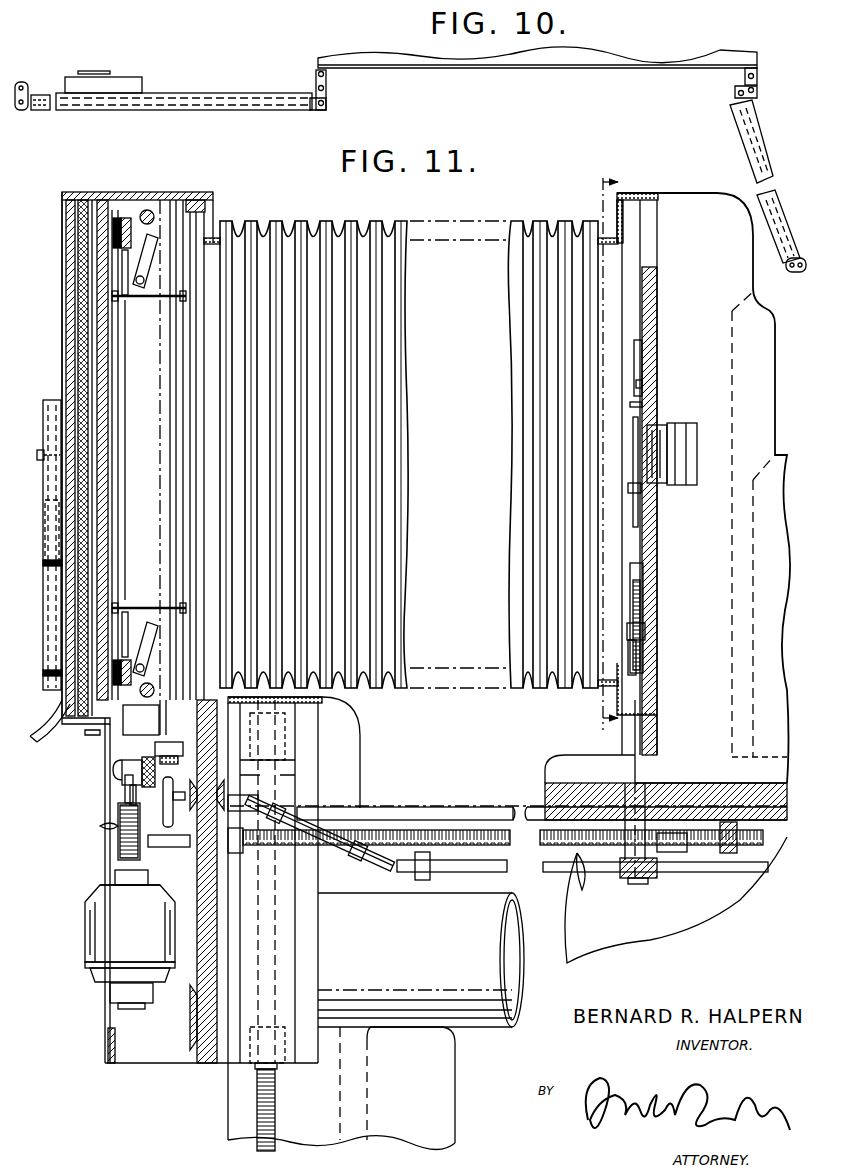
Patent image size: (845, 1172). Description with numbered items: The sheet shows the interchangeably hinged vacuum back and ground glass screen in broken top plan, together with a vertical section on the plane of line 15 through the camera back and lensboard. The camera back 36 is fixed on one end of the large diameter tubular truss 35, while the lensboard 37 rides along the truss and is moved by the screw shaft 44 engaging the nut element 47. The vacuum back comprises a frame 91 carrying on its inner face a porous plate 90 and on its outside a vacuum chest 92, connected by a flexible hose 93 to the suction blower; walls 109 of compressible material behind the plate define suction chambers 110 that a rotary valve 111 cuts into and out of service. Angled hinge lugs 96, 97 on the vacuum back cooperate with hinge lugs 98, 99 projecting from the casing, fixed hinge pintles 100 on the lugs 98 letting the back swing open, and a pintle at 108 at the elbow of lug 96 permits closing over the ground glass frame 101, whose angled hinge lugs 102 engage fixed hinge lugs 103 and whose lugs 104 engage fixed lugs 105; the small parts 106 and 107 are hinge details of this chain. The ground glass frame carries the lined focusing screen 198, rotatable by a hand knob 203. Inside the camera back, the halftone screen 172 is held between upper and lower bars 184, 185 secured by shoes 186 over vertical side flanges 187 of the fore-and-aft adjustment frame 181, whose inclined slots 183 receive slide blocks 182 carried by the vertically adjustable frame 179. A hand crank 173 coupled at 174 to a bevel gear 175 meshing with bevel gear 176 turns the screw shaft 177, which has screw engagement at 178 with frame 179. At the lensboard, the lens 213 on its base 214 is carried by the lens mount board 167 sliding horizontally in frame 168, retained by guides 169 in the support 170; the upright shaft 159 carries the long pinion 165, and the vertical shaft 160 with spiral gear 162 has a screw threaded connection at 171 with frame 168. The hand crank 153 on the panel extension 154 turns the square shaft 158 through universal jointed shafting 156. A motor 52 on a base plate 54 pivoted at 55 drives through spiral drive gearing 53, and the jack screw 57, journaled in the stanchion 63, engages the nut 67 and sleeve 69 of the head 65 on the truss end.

In FIG. 10, the camera back 36 is at (598, 68).
In FIG. 11, the camera back 36 is at (180, 192).
In FIG. 10, the frame 91 is at (180, 110).
In FIG. 11, the frame 91 is at (66, 205).
In FIG. 10, the vacuum chest 92 is at (140, 78).
In FIG. 11, the vacuum chest 92 is at (44, 400).
In FIG. 10, the rotary valve 111 is at (95, 71).
In FIG. 11, the rotary valve 111 is at (37, 453).
In FIG. 10, the angled hinge lug 97 is at (22, 110).
In FIG. 10, the hinge lug 98 is at (314, 80).
In FIG. 10, the fixed lug 105 is at (316, 70).
In FIG. 10, the fixed hinge pintle 100 is at (325, 87).
In FIG. 10, the angled hinge lug 96 is at (326, 100).
In FIG. 10, the pintle at elbow of hinge lug 108 is at (324, 106).
In FIG. 10, the hinge bracket 99 is at (752, 70).
In FIG. 10, the pin 107 is at (757, 77).
In FIG. 10, the bracket 106 is at (738, 93).
In FIG. 10, the angled hinge lug 102 is at (740, 97).
In FIG. 10, the fixed hinge lug 103 is at (760, 86).
In FIG. 10, the ground glass frame 101 is at (746, 140).
In FIG. 10, the angled lug 104 is at (797, 272).
In FIG. 11, the section line 15 is at (605, 454).
In FIG. 11, the porous plate 90 is at (80, 258).
In FIG. 11, the focusing screen 198 is at (100, 337).
In FIG. 11, the halftone screen 172 is at (120, 414).
In FIG. 11, the vertical side flange 187 is at (127, 398).
In FIG. 11, the fore-and-aft adjustment frame 181 is at (142, 450).
In FIG. 11, the vertically adjustable frame 179 is at (180, 572).
In FIG. 11, the upper bar 184 is at (120, 218).
In FIG. 11, the slide block 182 is at (147, 209).
In FIG. 11, the inclined slot 183 is at (154, 256).
In FIG. 11, the shoe 186 is at (127, 280).
In FIG. 11, the lower bar 185 is at (118, 680).
In FIG. 11, the screw shaft 177 is at (148, 684).
In FIG. 11, the screw engagement 178 is at (160, 726).
In FIG. 11, the suction chamber 110 is at (80, 485).
In FIG. 11, the wall or flange 109 is at (72, 540).
In FIG. 11, the lensboard 37 is at (708, 202).
In FIG. 11, the frame 168 is at (657, 276).
In FIG. 11, the lens mount board 167 is at (646, 361).
In FIG. 11, the guide 169 is at (641, 389).
In FIG. 11, the lens base 214 is at (642, 405).
In FIG. 11, the lens 213 is at (697, 455).
In FIG. 11, the upright shaft 159 is at (638, 516).
In FIG. 11, the long pinion 165 is at (645, 566).
In FIG. 11, the screw threaded connection 171 is at (648, 628).
In FIG. 11, the support 170 is at (655, 683).
In FIG. 11, the vertical shaft 160 is at (641, 768).
In FIG. 11, the screw shaft 44 is at (781, 846).
In FIG. 11, the spiral gear 162 is at (630, 880).
In FIG. 11, the nut element 47 is at (680, 852).
In FIG. 11, the upright frame or stanchion 63 is at (322, 713).
In FIG. 11, the flange or head 65 is at (290, 950).
In FIG. 11, the nut 67 is at (280, 735).
In FIG. 11, the sleeve 69 is at (280, 1049).
In FIG. 11, the jack screw 57 is at (260, 1146).
In FIG. 11, the universal jointed shafting 156 is at (352, 853).
In FIG. 11, the square shaft 158 is at (480, 872).
In FIG. 11, the tubular truss 35 is at (493, 1020).
In FIG. 11, the panel or flange extension 154 is at (205, 1030).
In FIG. 11, the motor 52 is at (85, 940).
In FIG. 11, the pivot 55 is at (172, 938).
In FIG. 11, the base plate 54 is at (180, 1000).
In FIG. 11, the spiral drive gearing 53 is at (118, 836).
In FIG. 11, the coupling 174 is at (122, 763).
In FIG. 11, the bevel gear 176 is at (155, 750).
In FIG. 11, the hand knob 203 is at (110, 762).
In FIG. 11, the hand crank 173 is at (130, 797).
In FIG. 11, the bevel gear 175 is at (163, 795).
In FIG. 11, the hand crank 153 is at (150, 841).
In FIG. 11, the flexible hose 93 is at (88, 730).